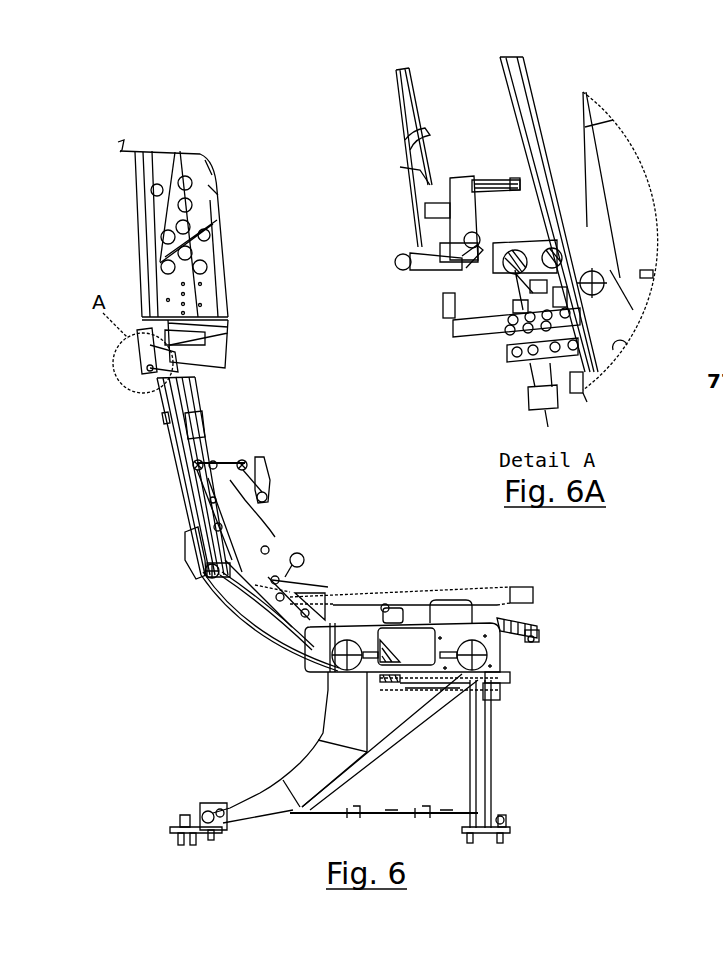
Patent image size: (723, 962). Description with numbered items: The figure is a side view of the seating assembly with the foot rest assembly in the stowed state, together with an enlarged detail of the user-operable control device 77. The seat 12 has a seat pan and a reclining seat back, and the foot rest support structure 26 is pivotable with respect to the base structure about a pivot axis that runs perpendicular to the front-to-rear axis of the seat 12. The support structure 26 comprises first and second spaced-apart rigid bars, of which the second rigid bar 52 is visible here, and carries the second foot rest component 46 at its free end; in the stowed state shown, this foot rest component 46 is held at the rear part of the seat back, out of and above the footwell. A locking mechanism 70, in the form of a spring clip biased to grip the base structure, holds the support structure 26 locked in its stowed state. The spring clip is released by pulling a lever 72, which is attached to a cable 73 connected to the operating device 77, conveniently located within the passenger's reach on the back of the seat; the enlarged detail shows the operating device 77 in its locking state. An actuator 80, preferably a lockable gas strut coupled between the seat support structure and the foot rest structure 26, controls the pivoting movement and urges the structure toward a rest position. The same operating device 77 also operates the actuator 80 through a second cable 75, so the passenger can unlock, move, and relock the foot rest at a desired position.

In FIG. 6, the seat 12 is at (282, 393).
In FIG. 6, the foot rest support structure 26 is at (240, 614).
In FIG. 6, the second foot rest component 46 is at (197, 545).
In FIG. 6, the second rigid bar 52 is at (277, 640).
In FIG. 6, the locking mechanism 70 is at (432, 790).
In FIG. 6A, the lever 72 is at (410, 165).
In FIG. 6, the cable 73 is at (172, 433).
In FIG. 6A, the cable 73 is at (512, 287).
In FIG. 6, the second cable 75 is at (200, 465).
In FIG. 6A, the second cable 75 is at (556, 272).
In FIG. 6, the user-operable control device 77 is at (133, 367).
In FIG. 6A, the user-operable control device 77 is at (457, 160).
In FIG. 6, the actuator 80 is at (400, 693).